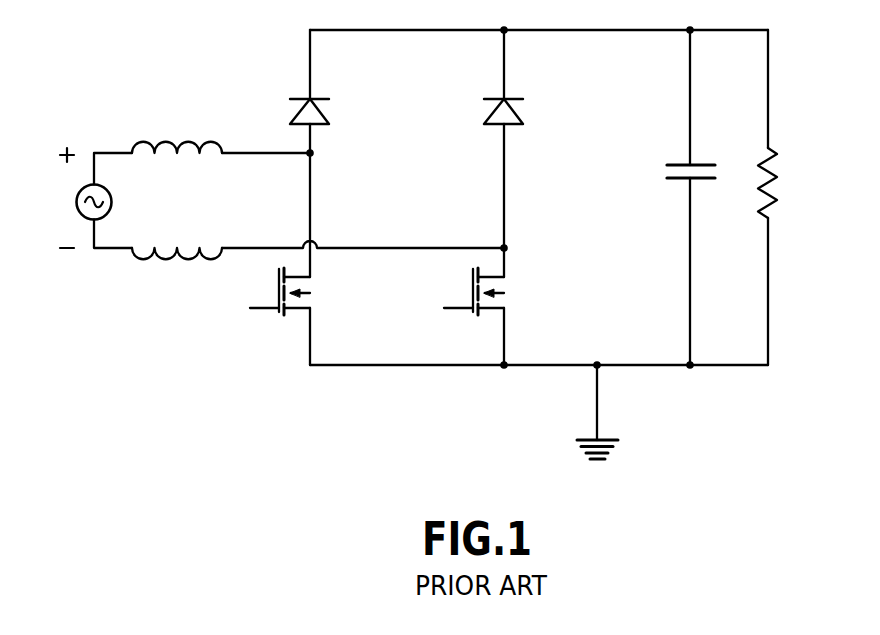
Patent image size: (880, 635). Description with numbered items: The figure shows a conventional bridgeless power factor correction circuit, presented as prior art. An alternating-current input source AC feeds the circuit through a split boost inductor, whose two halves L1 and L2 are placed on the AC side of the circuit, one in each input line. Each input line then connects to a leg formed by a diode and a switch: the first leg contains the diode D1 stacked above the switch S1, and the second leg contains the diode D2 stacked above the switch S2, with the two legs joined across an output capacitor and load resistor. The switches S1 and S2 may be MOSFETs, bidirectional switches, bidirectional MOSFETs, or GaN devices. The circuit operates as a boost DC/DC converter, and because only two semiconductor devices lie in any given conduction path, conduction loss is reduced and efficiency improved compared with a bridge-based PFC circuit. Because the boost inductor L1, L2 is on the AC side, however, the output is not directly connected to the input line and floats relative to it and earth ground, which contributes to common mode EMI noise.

The AC input source AC is at (70, 198).
The boost inductor L1 is at (177, 131).
The boost inductor L2 is at (177, 275).
The diode D1 is at (331, 116).
The diode D2 is at (524, 116).
The switch S1 is at (303, 291).
The switch S2 is at (497, 291).